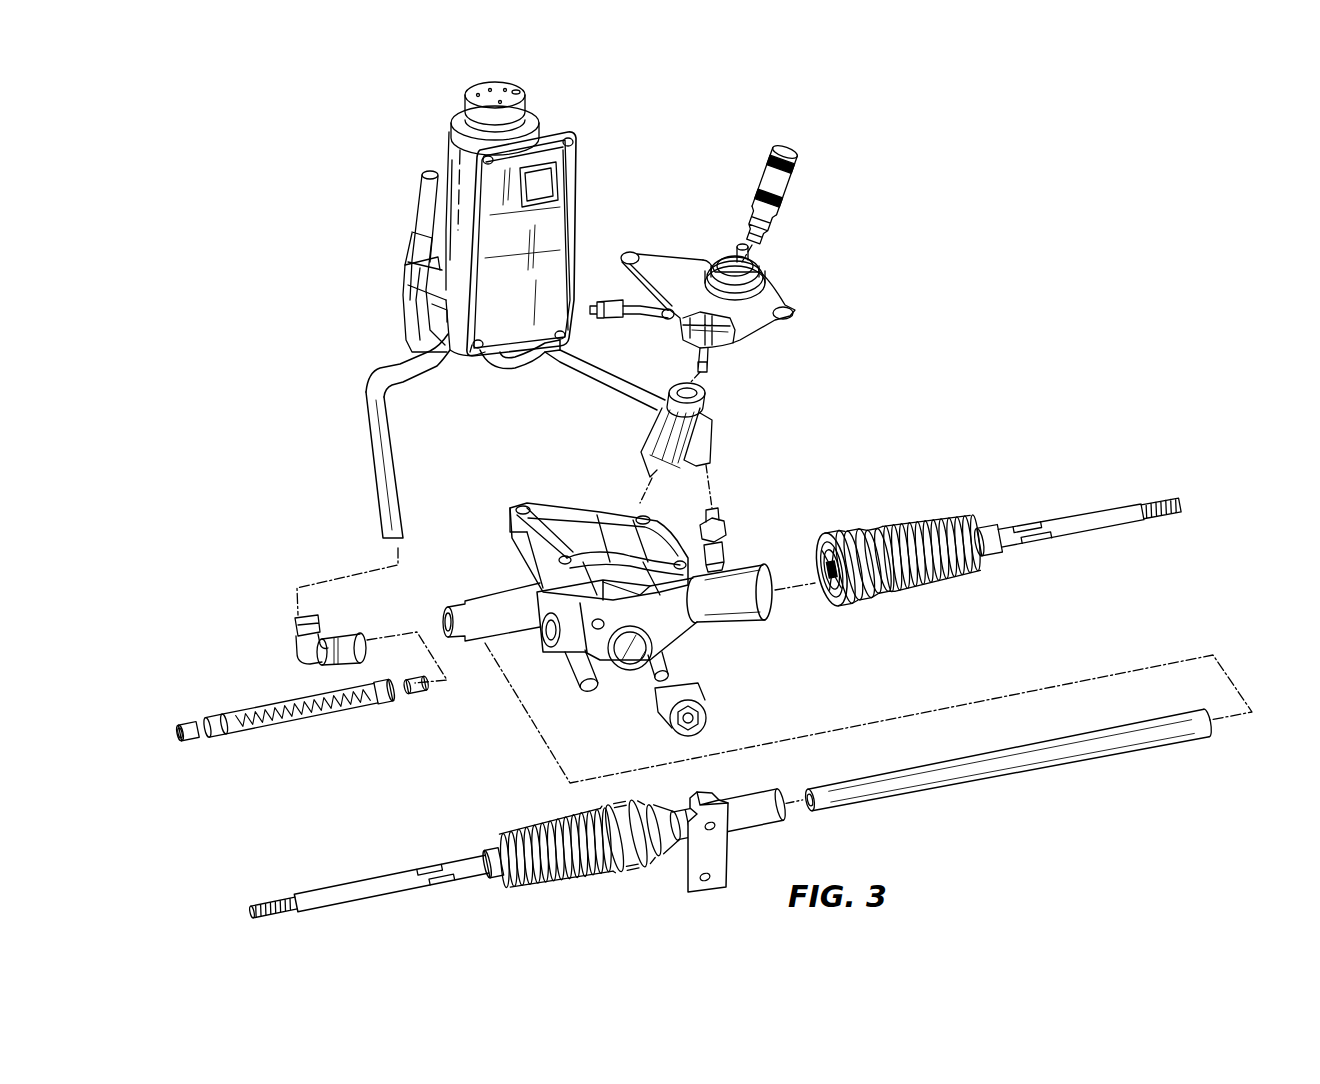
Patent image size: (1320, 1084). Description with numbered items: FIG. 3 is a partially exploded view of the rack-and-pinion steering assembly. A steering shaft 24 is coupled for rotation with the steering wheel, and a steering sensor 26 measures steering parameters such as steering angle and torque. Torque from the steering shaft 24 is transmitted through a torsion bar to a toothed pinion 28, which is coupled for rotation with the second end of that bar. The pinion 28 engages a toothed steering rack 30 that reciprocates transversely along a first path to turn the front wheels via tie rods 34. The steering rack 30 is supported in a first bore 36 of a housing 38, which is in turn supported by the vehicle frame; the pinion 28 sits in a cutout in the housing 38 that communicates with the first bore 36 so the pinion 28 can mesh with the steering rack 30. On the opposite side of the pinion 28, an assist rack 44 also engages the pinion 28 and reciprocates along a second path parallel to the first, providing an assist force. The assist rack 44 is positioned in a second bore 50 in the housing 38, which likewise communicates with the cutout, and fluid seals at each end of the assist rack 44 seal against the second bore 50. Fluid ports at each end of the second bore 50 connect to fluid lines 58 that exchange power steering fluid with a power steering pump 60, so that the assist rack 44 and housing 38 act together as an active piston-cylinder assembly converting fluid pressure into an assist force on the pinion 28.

The steering shaft 24 is at (790, 192).
The steering sensor 26 is at (775, 293).
The toothed pinion 28 is at (599, 510).
The toothed steering rack 30 is at (970, 766).
The tie rods 34 is at (1077, 522).
The first bore 36 is at (548, 645).
The housing 38 is at (668, 617).
The assist rack 44 is at (285, 700).
The second bore 50 is at (447, 612).
The fluid lines 58 is at (375, 444).
The power steering pump 60 is at (373, 172).